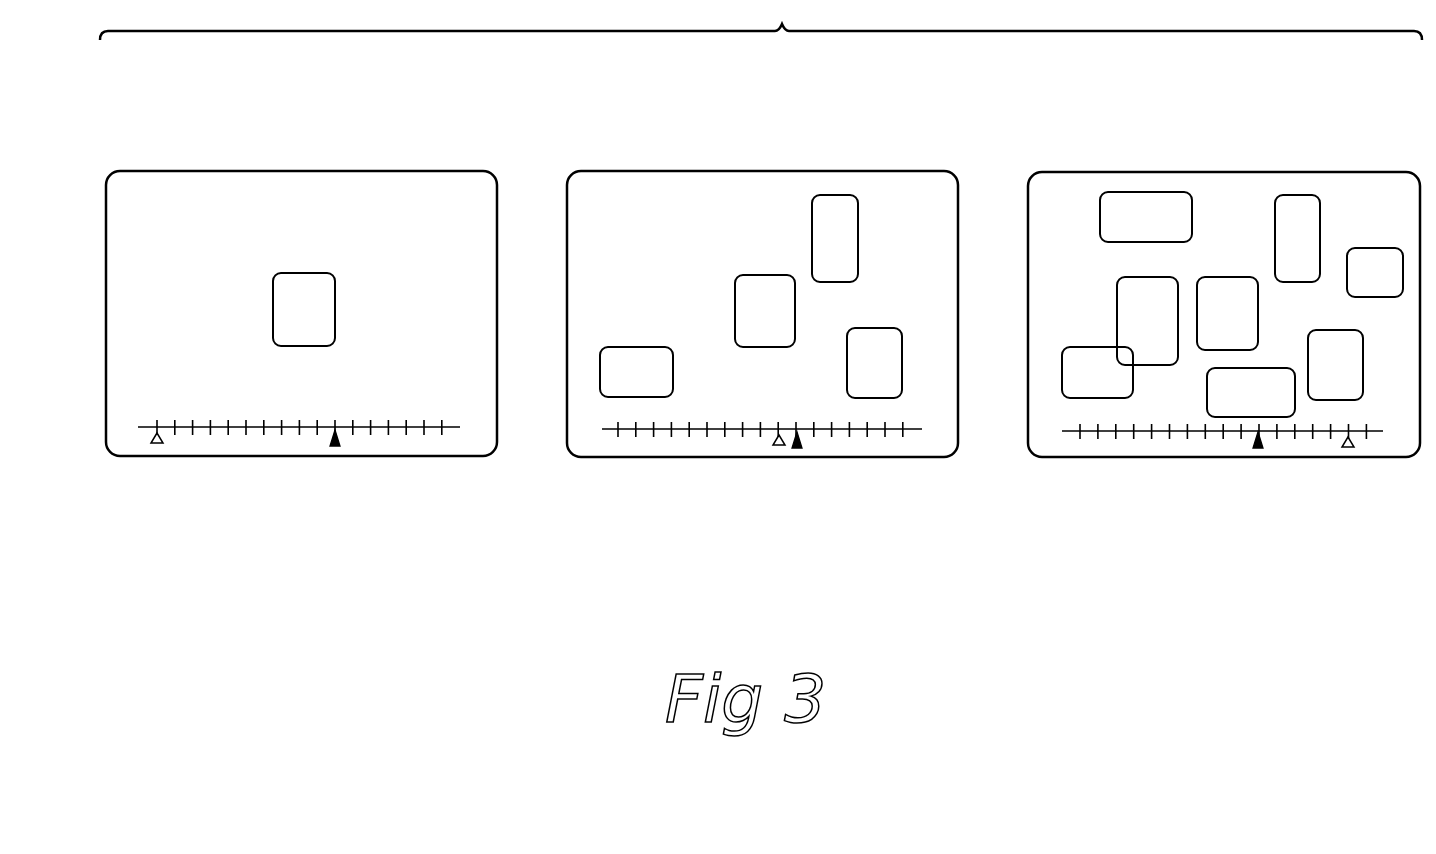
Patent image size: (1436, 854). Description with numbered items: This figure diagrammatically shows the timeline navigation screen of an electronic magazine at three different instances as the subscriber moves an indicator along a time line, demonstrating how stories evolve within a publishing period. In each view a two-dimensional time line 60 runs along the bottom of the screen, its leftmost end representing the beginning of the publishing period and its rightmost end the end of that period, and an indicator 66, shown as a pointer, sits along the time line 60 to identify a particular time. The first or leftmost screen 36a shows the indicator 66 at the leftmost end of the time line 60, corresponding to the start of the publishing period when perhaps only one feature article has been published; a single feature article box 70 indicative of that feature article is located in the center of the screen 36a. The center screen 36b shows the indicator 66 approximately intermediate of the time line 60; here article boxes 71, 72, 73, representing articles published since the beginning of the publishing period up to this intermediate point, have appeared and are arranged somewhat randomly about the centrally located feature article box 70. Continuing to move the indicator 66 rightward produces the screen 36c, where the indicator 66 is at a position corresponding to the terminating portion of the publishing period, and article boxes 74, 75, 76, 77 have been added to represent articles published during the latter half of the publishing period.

The first or leftmost screen 36a is at (283, 165).
The center screen 36b is at (745, 165).
The screen at terminating portion 36c is at (1206, 165).
The time line 60 is at (335, 446).
The indicator 66 is at (157, 443).
The feature article box 70 is at (307, 290).
The article box 71 is at (625, 355).
The article box 72 is at (843, 249).
The article box 73 is at (892, 382).
The article box 74 is at (1108, 228).
The article box 75 is at (1125, 305).
The article box 76 is at (1218, 408).
The article box 77 is at (1358, 292).